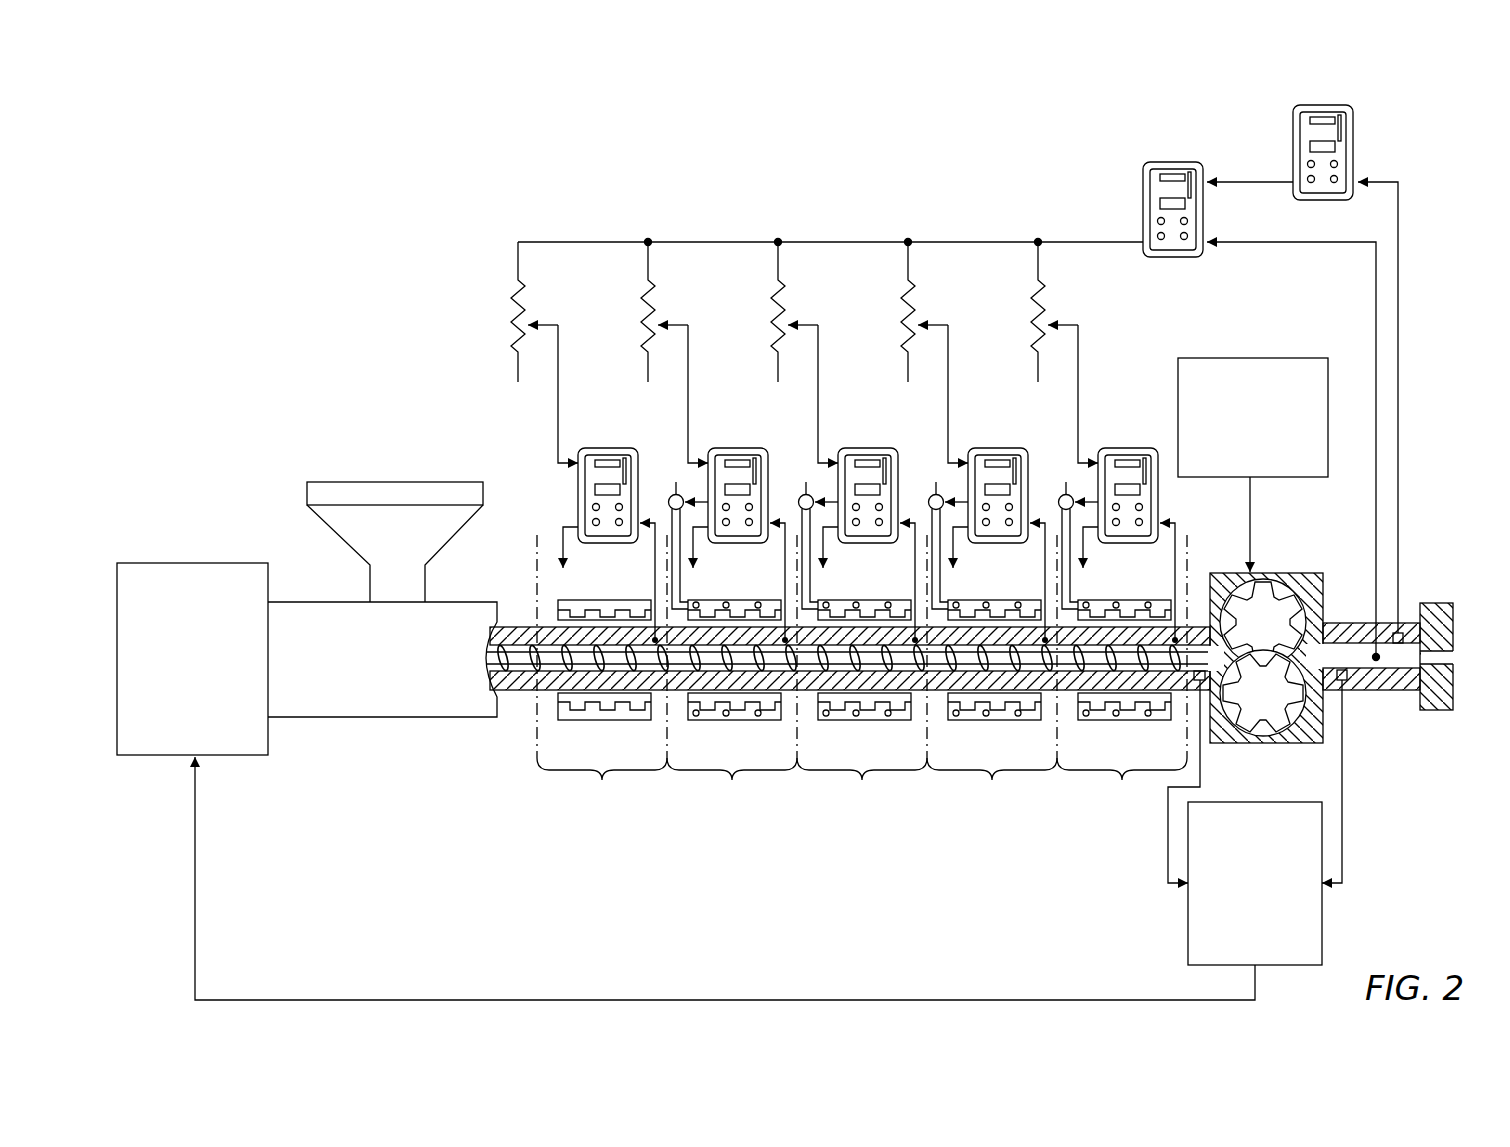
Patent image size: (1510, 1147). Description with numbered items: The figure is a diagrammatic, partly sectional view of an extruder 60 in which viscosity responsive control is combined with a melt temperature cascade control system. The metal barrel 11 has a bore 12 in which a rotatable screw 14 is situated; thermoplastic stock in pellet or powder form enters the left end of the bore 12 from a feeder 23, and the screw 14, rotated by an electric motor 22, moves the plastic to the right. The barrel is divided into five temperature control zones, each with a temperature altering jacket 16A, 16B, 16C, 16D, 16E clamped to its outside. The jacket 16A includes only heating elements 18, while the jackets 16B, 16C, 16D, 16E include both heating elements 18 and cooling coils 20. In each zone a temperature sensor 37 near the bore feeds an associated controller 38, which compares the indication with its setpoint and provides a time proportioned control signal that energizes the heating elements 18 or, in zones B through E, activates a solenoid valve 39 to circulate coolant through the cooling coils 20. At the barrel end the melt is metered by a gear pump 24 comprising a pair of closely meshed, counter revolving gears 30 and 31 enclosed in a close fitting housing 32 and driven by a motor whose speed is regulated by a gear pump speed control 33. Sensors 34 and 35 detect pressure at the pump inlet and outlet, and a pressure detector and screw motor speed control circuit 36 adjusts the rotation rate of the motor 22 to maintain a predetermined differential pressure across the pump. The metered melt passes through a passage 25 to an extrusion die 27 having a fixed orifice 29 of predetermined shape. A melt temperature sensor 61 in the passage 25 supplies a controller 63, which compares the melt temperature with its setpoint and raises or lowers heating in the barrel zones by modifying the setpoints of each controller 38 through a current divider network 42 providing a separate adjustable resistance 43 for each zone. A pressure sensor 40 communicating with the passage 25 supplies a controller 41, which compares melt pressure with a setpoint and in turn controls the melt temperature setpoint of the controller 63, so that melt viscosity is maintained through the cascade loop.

The barrel 11 is at (518, 692).
The bore 12 is at (513, 648).
The screw 14 is at (490, 657).
The temperature altering jacket 16A is at (622, 721).
The temperature altering jacket 16B is at (752, 721).
The temperature altering jacket 16C is at (882, 721).
The temperature altering jacket 16D is at (1012, 721).
The temperature altering jacket 16E is at (1142, 721).
The heating elements 18 is at (608, 612).
The cooling coils 20 is at (720, 606).
The electric motor 22 is at (152, 757).
The feeder 23 is at (310, 494).
The gear pump 24 is at (1300, 577).
The passage 25 is at (1367, 668).
The extrusion die 27 is at (1440, 697).
The orifice 29 is at (1458, 652).
The gear 30 is at (1263, 596).
The gear 31 is at (1284, 716).
The housing 32 is at (1232, 730).
The gear pump speed control 33 is at (1290, 358).
The pressure sensor 34 is at (1263, 622).
The pressure sensor 35 is at (1341, 668).
The pressure detector and screw motor speed control circuit 36 is at (1188, 920).
The temperature sensor 37 is at (652, 637).
The controller 38 is at (604, 448).
The solenoid valve 39 is at (670, 497).
The pressure sensor 40 is at (1403, 633).
The controller 41 is at (1353, 123).
The current divider network 42 is at (483, 333).
The adjustable resistance 43 is at (512, 312).
The extruder 60 is at (462, 800).
The melt temperature sensor 61 is at (1376, 657).
The controller 63 is at (1143, 180).